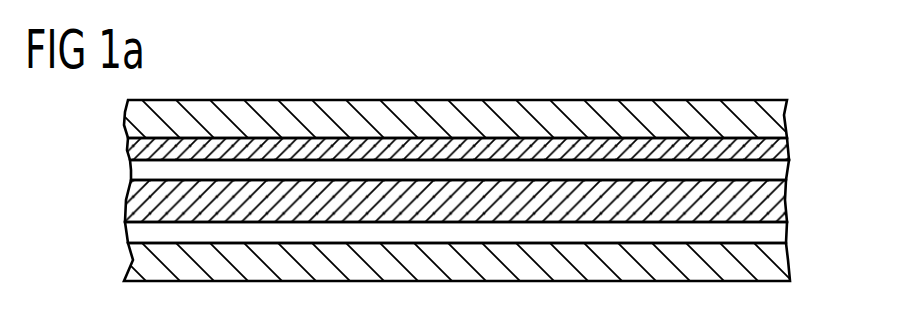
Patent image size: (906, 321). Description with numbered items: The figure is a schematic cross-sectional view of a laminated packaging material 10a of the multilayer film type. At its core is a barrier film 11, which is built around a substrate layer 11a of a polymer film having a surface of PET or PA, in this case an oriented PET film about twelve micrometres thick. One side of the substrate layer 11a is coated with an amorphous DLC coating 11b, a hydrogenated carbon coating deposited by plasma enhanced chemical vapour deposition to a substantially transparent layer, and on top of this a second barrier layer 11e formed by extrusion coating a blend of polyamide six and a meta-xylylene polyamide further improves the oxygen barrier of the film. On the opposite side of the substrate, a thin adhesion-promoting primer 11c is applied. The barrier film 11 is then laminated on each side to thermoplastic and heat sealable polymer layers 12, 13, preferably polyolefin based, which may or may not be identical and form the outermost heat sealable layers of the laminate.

The laminated packaging material 10a is at (442, 185).
The barrier film 11 is at (118, 137).
The substrate layer 11a is at (773, 200).
The amorphous DLC coating 11b is at (775, 170).
The adhesion-promoting primer layer 11c is at (773, 230).
The second barrier layer 11e is at (773, 150).
The thermoplastic heat sealable polymer layer 12 is at (774, 115).
The thermoplastic heat sealable polymer layer 13 is at (773, 263).